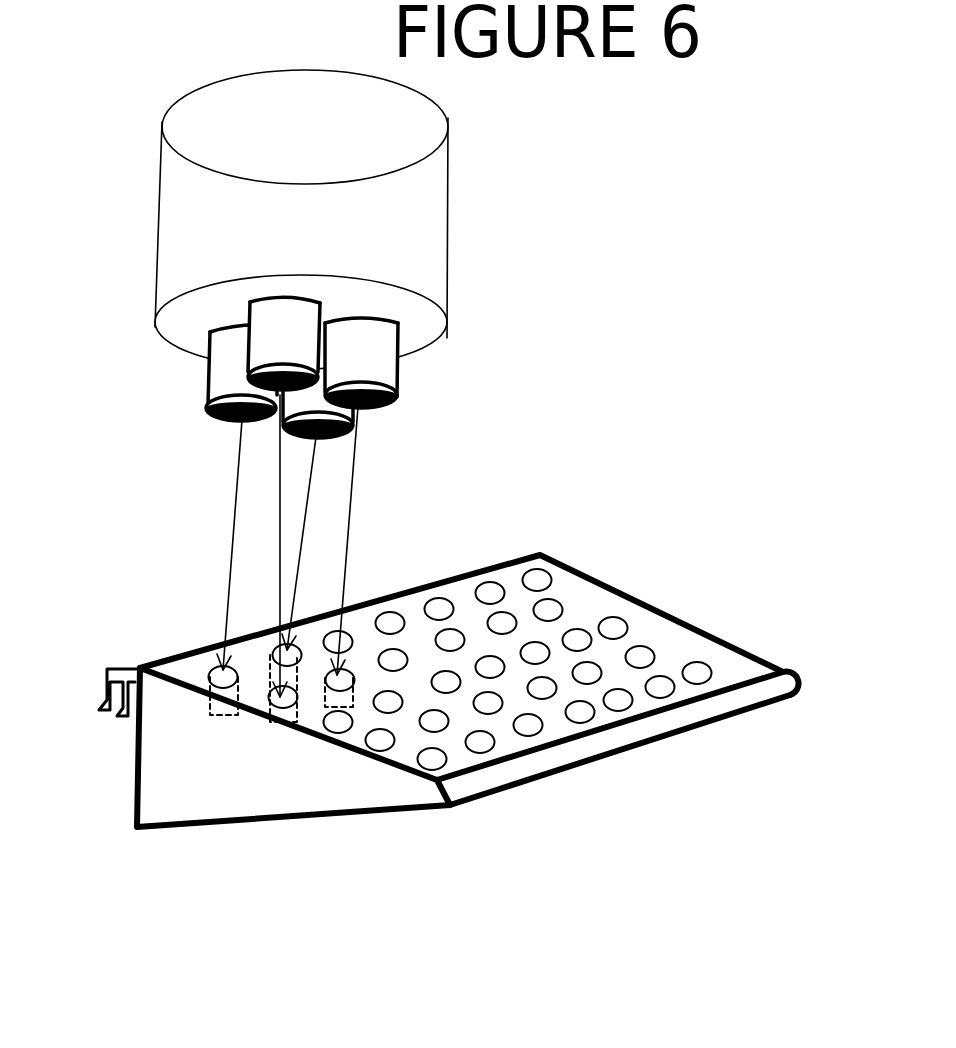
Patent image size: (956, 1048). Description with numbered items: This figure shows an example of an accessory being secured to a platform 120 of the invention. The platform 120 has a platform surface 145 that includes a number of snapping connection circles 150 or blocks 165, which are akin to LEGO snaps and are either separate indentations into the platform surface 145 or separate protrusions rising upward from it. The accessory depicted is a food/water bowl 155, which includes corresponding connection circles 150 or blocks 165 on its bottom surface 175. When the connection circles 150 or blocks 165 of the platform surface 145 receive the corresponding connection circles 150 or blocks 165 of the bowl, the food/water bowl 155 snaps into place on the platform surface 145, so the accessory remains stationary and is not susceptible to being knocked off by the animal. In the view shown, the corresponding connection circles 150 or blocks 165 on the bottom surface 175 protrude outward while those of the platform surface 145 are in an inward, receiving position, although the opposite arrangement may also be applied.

The platform 120 is at (230, 785).
The platform surface 145 is at (666, 642).
The connection circles 150 is at (437, 752).
The food/water bowl 155 is at (400, 236).
The blocks 165 is at (230, 390).
The bottom surface 175 is at (422, 335).